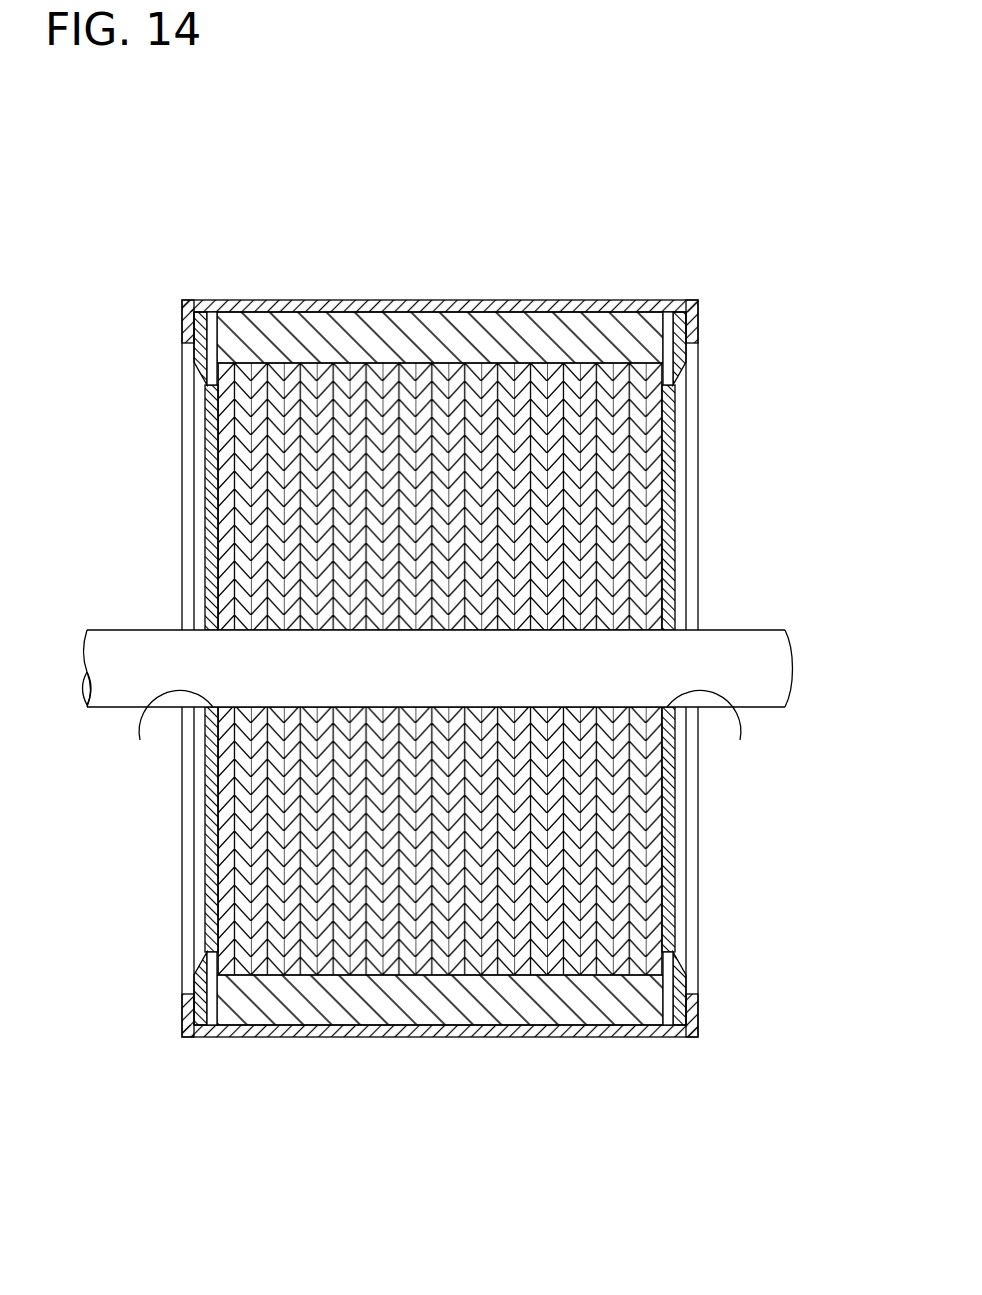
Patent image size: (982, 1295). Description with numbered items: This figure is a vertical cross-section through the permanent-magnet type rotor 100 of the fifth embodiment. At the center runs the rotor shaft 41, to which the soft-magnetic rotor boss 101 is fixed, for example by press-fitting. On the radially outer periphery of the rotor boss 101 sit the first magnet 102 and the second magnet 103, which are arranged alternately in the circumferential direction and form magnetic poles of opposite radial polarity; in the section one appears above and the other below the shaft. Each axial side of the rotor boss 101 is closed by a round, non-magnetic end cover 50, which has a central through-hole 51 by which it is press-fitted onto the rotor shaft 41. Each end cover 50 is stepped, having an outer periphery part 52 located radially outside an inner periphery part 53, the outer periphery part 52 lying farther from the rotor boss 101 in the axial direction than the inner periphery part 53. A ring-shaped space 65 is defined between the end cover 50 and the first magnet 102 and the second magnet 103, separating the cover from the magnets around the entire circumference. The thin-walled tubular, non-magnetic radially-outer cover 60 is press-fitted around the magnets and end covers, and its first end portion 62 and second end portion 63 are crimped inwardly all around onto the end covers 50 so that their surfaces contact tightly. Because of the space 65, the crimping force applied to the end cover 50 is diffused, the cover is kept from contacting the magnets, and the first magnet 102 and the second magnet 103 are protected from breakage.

The rotor 100 is at (521, 299).
The radially-outer cover 60 is at (441, 300).
The first end portion 62 is at (186, 320).
The second end portion 63 is at (695, 323).
The second magnet 103 is at (373, 340).
The first magnet 102 is at (440, 1028).
The rotor boss 101 is at (243, 848).
The end cover 50 is at (192, 497).
The outer periphery part 52 is at (195, 352).
The inner periphery part 53 is at (210, 552).
The space 65 is at (212, 323).
The rotor shaft 41 is at (780, 680).
The through-hole 51 is at (440, 729).